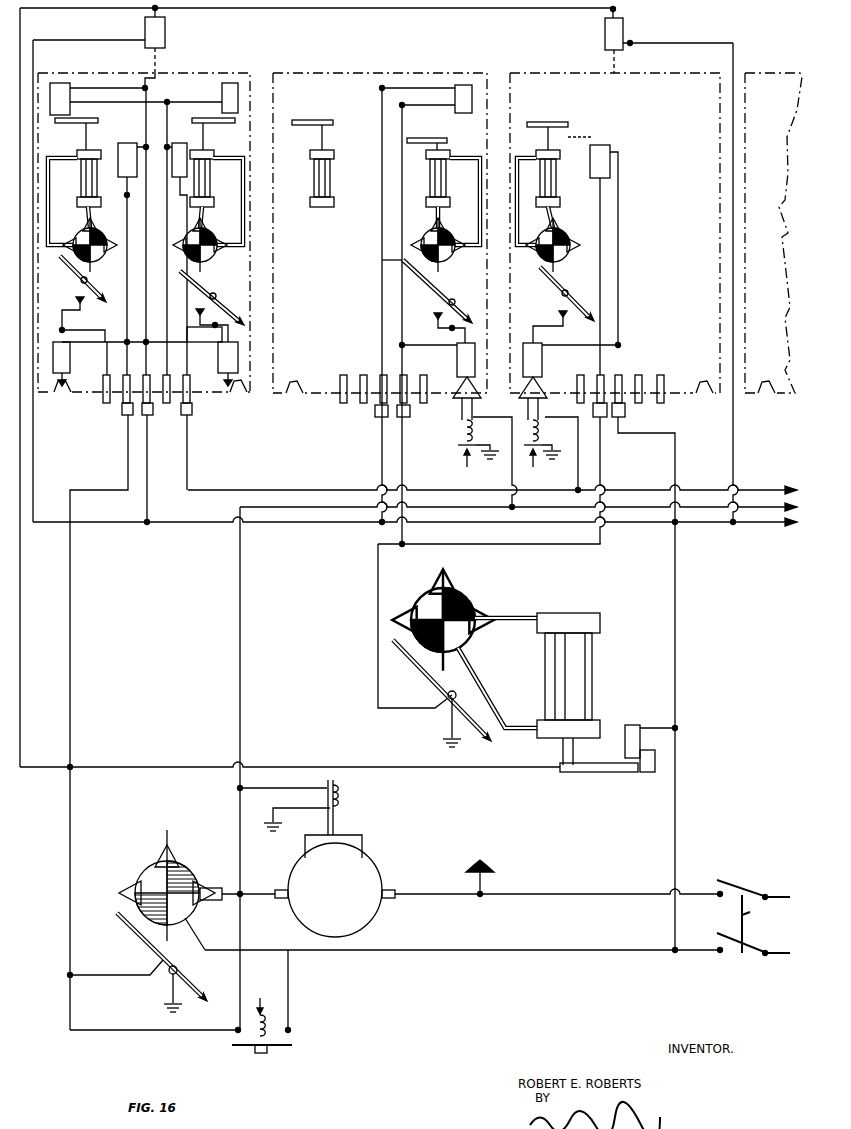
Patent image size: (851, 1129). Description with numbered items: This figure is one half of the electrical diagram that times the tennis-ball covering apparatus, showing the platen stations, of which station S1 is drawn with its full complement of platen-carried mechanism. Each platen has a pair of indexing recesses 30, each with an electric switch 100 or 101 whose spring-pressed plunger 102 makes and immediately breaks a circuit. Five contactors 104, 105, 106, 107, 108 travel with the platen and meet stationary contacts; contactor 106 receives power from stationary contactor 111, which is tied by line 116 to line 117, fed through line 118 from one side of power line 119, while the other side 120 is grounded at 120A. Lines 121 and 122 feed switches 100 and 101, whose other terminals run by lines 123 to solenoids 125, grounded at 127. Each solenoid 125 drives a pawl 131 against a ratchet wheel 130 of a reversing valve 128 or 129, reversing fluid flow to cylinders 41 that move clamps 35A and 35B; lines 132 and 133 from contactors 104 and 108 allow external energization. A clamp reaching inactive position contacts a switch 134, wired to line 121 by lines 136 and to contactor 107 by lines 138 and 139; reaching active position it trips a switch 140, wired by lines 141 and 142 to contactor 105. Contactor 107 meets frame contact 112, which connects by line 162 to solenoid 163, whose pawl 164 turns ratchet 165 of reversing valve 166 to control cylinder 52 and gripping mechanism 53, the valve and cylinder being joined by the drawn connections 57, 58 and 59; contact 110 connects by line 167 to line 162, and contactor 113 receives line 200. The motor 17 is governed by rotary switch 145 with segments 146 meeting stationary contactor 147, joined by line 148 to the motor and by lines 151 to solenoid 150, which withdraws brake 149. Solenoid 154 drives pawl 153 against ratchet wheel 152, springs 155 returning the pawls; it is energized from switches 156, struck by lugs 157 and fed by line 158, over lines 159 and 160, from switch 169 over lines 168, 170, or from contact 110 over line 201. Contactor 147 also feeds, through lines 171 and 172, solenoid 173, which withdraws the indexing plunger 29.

The motor 17 is at (375, 870).
The indexing plunger 29 is at (478, 402).
The indexing recess 30 is at (420, 248).
The clamping mechanism 35A is at (428, 132).
The clamping mechanism 35B is at (600, 127).
The cylinder 41 is at (78, 180).
The cylinder 52 is at (598, 668).
The clamping mechanism 53 is at (580, 752).
The conduit 57 is at (510, 616).
The conduit 58 is at (518, 726).
The port 59 is at (480, 630).
The electric switch 100 is at (70, 352).
The electric switch 101 is at (240, 360).
The spring-pressed plunger 102 is at (66, 382).
The electrical contactor 104 is at (343, 375).
The electrical contactor 105 is at (122, 395).
The electrical contactor 106 is at (145, 407).
The electrical contactor 107 is at (190, 415).
The electrical contactor 108 is at (195, 400).
The stationary frame contact 110 is at (124, 418).
The stationary contactor 111 is at (151, 415).
The frame contact 112 is at (405, 417).
The stationary contactor 113 is at (196, 413).
The line 116 is at (148, 484).
The line 117 is at (182, 530).
The line 118 is at (677, 782).
The power line 119 is at (618, 950).
The power line side 120 is at (608, 890).
The ground 120A is at (487, 862).
The line 121 is at (628, 284).
The line 122 is at (317, 322).
The line 123 is at (288, 318).
The solenoid 125 is at (90, 278).
The ground 127 is at (415, 326).
The reversing valve 128 is at (95, 235).
The reversing valve 129 is at (195, 232).
The ratchet wheel 130 is at (110, 240).
The pawl 131 is at (64, 266).
The line 132 is at (117, 372).
The line 133 is at (207, 351).
The switch 134 is at (70, 92).
The line 136 is at (112, 88).
The line 138 is at (262, 315).
The line 139 is at (165, 250).
The switch 140 is at (122, 143).
The line 141 is at (139, 140).
The line 142 is at (124, 202).
The rotary switch 145 is at (149, 856).
The segment 146 is at (178, 862).
The stationary contactor 147 is at (218, 902).
The line 148 is at (253, 893).
The brake 149 is at (350, 840).
The solenoid 150 is at (340, 800).
The line 151 is at (302, 786).
The ratchet wheel 152 is at (156, 829).
The pawl 153 is at (140, 943).
The solenoid 154 is at (180, 968).
The spring 155 is at (207, 1000).
The switch 156 is at (165, 30).
The lug 157 is at (150, 57).
The line 158 is at (100, 42).
The line 159 is at (300, 14).
The line 160 is at (70, 810).
The line 162 is at (404, 470).
The solenoid 163 is at (447, 700).
The pawl 164 is at (420, 670).
The ratchet 165 is at (450, 578).
The reversing valve 166 is at (474, 641).
The line 167 is at (600, 476).
The line 168 is at (655, 728).
The switch 169 is at (630, 725).
The line 170 is at (148, 766).
The line 171 is at (766, 514).
The line 172 is at (512, 478).
The solenoid 173 is at (474, 432).
The line 200 is at (200, 470).
The line 201 is at (126, 466).
The station S1 is at (244, 70).